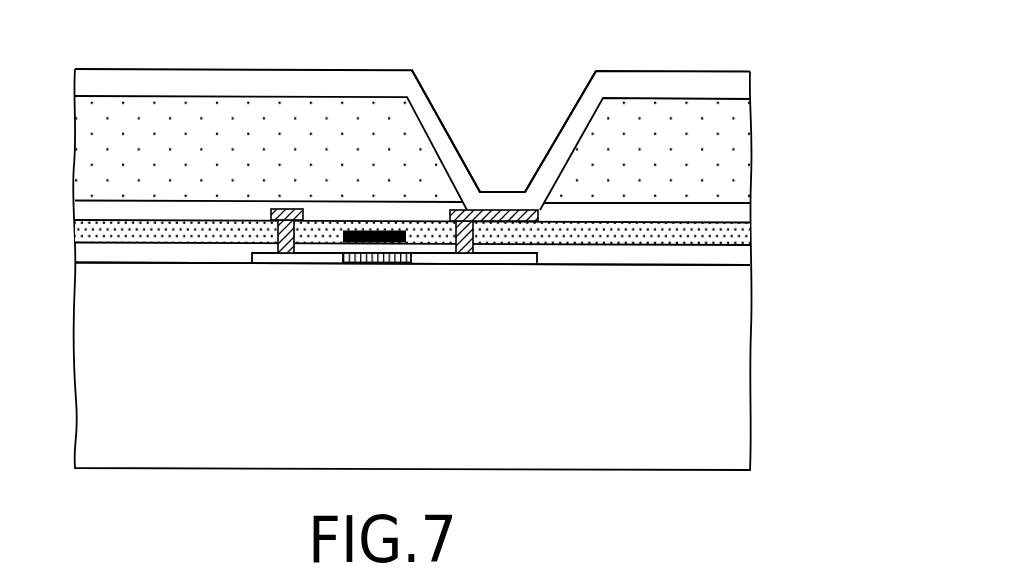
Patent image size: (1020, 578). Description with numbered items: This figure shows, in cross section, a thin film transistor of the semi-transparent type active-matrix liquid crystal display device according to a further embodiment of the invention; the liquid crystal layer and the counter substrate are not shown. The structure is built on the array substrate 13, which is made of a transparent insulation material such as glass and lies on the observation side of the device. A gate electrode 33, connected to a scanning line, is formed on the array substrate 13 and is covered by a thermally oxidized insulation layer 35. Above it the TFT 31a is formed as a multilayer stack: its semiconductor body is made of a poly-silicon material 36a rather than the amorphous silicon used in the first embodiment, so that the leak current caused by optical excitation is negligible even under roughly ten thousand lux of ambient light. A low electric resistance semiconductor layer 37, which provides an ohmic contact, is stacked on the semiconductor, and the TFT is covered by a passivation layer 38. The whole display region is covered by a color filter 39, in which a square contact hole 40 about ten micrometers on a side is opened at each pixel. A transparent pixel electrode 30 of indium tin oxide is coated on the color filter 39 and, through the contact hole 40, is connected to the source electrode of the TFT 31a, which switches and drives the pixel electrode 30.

The array substrate 13 is at (743, 365).
The pixel electrode 30 is at (402, 77).
The thin film transistor 31a is at (372, 266).
The gate electrode 33 is at (343, 243).
The thermally oxidized insulation layer 35 is at (603, 256).
The poly-silicon material 36a is at (515, 264).
The low electric resistance semiconductor layer 37 is at (464, 253).
The passivation layer 38 is at (742, 214).
The color filter 39 is at (618, 123).
The contact hole 40 is at (513, 120).